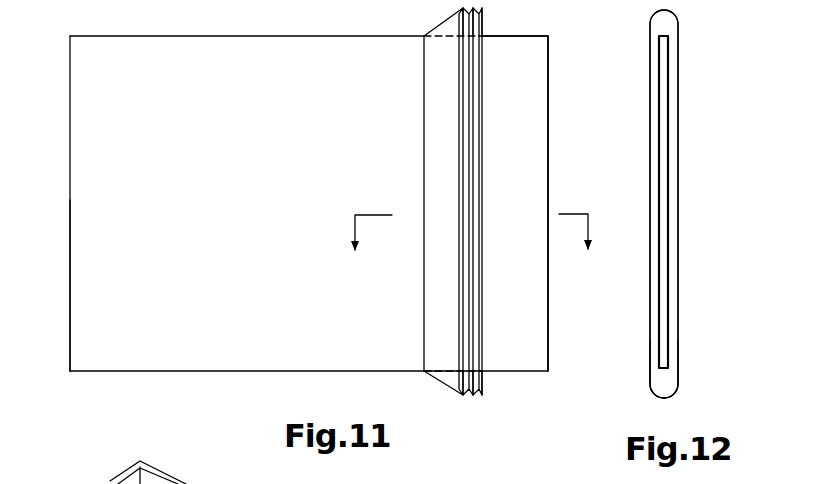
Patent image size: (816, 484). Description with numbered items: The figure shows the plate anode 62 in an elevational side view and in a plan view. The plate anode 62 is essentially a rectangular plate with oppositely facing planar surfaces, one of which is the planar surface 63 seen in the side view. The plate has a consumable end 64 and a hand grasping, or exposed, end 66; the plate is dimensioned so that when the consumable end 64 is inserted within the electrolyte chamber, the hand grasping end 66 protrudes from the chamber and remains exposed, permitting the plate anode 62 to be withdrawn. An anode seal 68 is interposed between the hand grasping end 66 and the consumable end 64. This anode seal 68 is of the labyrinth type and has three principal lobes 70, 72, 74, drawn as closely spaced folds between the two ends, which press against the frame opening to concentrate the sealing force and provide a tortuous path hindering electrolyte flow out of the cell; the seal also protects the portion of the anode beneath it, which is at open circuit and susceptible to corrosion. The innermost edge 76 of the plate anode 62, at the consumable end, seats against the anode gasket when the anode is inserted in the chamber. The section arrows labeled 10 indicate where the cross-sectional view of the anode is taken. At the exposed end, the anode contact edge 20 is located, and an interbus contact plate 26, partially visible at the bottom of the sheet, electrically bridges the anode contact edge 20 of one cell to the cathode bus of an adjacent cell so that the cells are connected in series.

In FIG. 11, the section line 10 is at (473, 250).
In FIG. 11, the anode contact edge 20 is at (549, 106).
In FIG. 12, the anode contact edge 20 is at (664, 98).
In FIG. 11, the interbus contact plate 26 is at (72, 483).
In FIG. 11, the plate anode 62 is at (153, 390).
In FIG. 12, the plate anode 62 is at (699, 187).
In FIG. 11, the planar surface 63 is at (238, 220).
In FIG. 11, the consumable end 64 is at (248, 306).
In FIG. 11, the hand grasping end 66 is at (520, 302).
In FIG. 12, the hand grasping end 66 is at (665, 270).
In FIG. 11, the anode seal 68 is at (451, 378).
In FIG. 12, the anode seal 68 is at (665, 384).
In FIG. 11, the lobe 70 is at (462, 397).
In FIG. 11, the lobe 72 is at (474, 396).
In FIG. 11, the lobe 74 is at (470, 394).
In FIG. 11, the innermost edge 76 is at (70, 297).